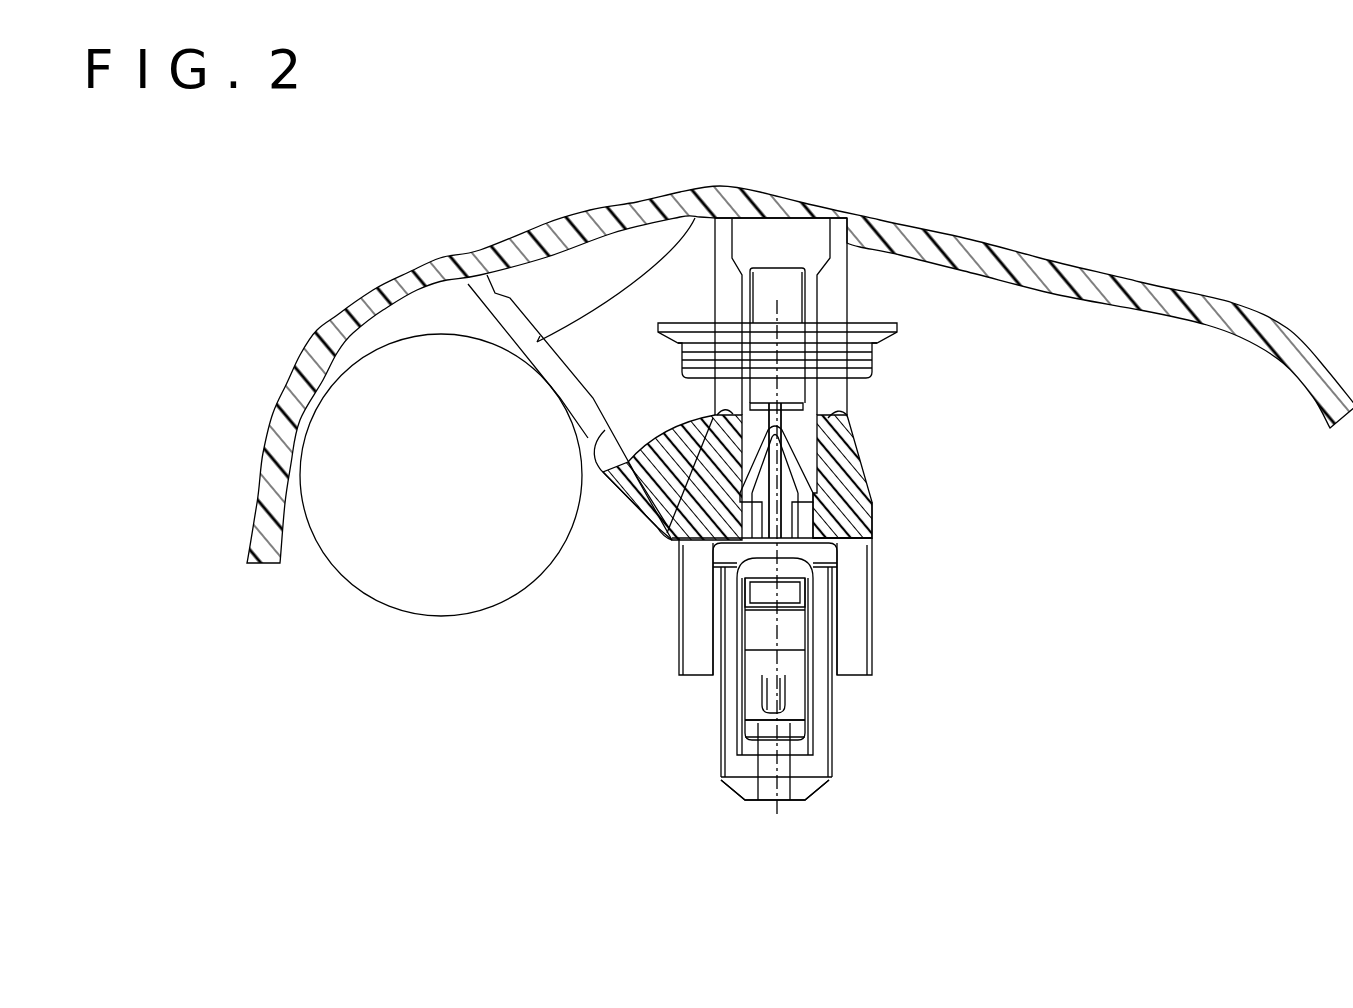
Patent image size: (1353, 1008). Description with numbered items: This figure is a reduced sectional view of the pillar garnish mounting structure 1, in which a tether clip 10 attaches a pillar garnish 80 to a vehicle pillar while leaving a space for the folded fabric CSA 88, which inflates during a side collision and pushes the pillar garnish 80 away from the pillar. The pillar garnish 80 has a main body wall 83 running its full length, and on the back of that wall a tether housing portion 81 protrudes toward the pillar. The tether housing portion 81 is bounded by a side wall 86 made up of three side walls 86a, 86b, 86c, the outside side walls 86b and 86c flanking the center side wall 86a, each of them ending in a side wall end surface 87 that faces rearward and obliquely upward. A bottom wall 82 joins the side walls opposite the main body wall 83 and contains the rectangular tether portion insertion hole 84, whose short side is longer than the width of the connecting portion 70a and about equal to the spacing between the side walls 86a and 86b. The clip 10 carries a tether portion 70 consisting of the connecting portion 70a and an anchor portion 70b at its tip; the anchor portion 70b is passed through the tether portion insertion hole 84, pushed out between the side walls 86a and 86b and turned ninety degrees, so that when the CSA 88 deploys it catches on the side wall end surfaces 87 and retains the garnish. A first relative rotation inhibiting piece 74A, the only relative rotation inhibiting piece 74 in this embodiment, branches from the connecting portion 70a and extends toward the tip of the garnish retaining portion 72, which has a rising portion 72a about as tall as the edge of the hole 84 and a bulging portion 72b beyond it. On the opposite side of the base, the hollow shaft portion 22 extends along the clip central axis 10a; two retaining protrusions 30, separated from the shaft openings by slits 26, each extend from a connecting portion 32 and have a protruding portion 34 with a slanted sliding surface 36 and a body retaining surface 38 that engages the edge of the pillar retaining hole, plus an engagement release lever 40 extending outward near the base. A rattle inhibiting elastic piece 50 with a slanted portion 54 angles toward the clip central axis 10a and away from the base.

The pillar garnish mounting structure 1 is at (893, 537).
The tether clip 10 is at (722, 720).
The clip central axis 10a is at (777, 805).
The shaft portion 22 is at (721, 760).
The slit 26 is at (743, 613).
The retaining protrusion 30 is at (854, 699).
The connecting portion 32 is at (770, 745).
The protruding portion 34 is at (793, 710).
The sliding surface 36 is at (785, 723).
The body retaining surface 38 is at (780, 645).
The engagement release lever 40 is at (785, 597).
The rattle inhibiting elastic piece 50 is at (690, 655).
The slanted portion 54 is at (703, 602).
The tether portion 70 is at (849, 335).
The connecting portion 70a is at (790, 300).
The anchor portion 70b is at (880, 335).
The garnish retaining portion 72 is at (714, 595).
The rising portion 72a is at (693, 548).
The bulging portion 72b is at (753, 525).
The relative rotation inhibiting piece 74 is at (776, 470).
The first relative rotation inhibiting piece 74A is at (790, 398).
The pillar garnish 80 is at (1012, 243).
The tether housing portion 81 is at (833, 420).
The bottom wall 82 is at (850, 465).
The main body wall 83 is at (532, 237).
The tether portion insertion hole 84 is at (822, 492).
The side wall 86 is at (777, 260).
The center side wall 86a is at (725, 245).
The outside side wall 86b is at (843, 280).
The outside side wall 86c is at (696, 215).
The side wall end surface 87 is at (603, 472).
The CSA 88 is at (438, 615).